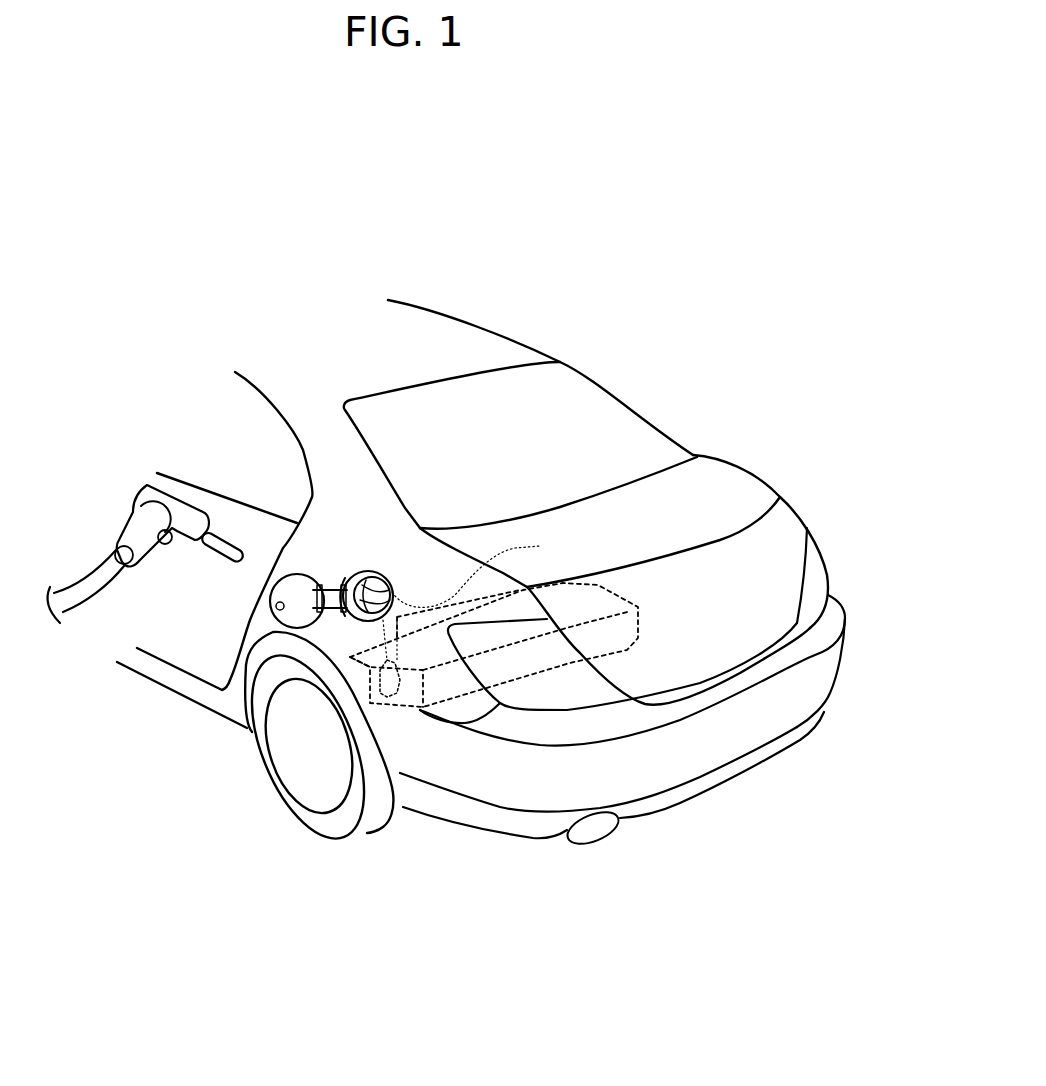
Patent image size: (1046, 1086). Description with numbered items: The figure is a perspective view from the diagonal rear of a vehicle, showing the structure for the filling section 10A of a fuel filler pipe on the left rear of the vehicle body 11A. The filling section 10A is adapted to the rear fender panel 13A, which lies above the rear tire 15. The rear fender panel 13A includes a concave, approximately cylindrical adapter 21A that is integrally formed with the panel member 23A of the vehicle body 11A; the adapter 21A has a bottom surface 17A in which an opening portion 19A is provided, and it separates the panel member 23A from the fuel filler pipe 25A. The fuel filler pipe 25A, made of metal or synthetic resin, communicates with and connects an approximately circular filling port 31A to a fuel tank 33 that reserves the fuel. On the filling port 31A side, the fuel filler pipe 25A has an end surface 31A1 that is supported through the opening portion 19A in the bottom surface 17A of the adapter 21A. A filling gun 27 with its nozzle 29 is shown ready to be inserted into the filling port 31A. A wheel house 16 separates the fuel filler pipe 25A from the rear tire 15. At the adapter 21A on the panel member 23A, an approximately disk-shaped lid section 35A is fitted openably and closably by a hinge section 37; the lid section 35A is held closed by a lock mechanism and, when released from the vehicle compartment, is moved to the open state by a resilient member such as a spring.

The vehicle body 11A is at (555, 283).
The filling section 10A is at (378, 533).
The rear fender panel 13A is at (390, 548).
The rear tire 15 is at (368, 828).
The wheel house 16 is at (263, 647).
The bottom surface 17A is at (357, 572).
The opening portion 19A is at (384, 575).
The adapter 21A is at (391, 588).
The panel member 23A is at (325, 562).
The fuel filler pipe 25A is at (488, 570).
The filling gun 27 is at (150, 503).
The nozzle 29 is at (230, 541).
The filling port 31A is at (382, 616).
The end surface 31A1 is at (481, 774).
The fuel tank 33 is at (637, 630).
The lid section 35A is at (272, 594).
The hinge section 37 is at (340, 611).